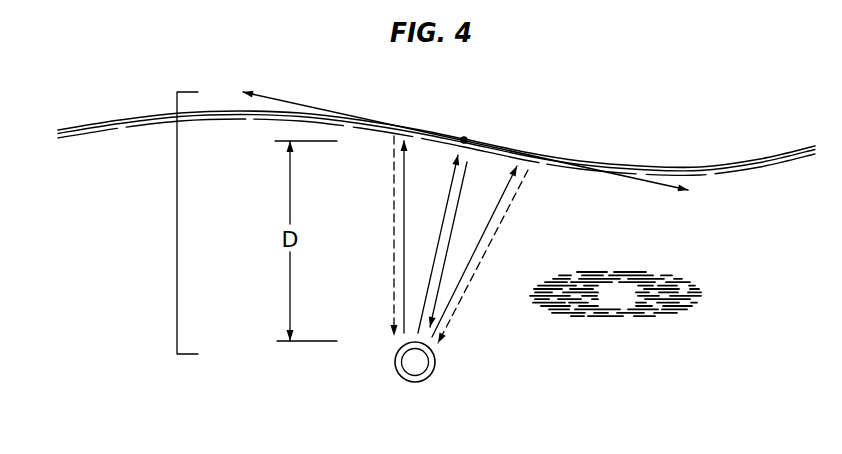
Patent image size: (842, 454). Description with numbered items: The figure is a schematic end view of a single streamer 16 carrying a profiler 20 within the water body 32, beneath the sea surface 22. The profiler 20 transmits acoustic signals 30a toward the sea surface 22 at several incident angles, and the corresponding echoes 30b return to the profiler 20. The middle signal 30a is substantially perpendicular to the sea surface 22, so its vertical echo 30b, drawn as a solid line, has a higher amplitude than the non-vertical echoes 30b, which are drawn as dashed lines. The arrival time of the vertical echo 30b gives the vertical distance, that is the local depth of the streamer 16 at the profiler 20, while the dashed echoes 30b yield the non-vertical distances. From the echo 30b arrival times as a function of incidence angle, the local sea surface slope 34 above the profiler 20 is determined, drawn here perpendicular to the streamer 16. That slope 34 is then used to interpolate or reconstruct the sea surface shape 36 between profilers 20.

The streamer 16 is at (415, 363).
The profiler 20 is at (428, 375).
The sea surface 22 is at (773, 153).
The transmission signals 30a is at (445, 222).
The echoes 30b is at (394, 275).
The water body 32 is at (632, 306).
The local sea surface slope 34 is at (287, 101).
The sea surface shape 36 is at (177, 222).